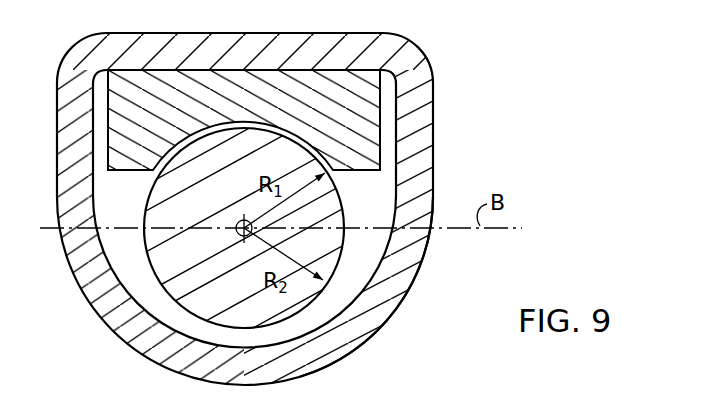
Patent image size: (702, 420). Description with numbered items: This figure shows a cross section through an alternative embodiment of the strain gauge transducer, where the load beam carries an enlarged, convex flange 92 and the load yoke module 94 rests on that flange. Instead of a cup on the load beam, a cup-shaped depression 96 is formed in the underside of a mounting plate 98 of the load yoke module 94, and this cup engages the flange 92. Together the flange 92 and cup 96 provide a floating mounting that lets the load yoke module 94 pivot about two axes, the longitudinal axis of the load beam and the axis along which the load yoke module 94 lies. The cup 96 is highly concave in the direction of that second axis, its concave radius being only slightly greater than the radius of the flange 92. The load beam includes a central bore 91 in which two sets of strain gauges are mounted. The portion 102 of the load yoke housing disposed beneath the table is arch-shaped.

The load yoke module 94 is at (445, 64).
The cup-shaped depression 96 is at (157, 169).
The mounting plate 98 is at (380, 147).
The central bore 91 is at (238, 222).
The flange 92 is at (146, 203).
The portion of the load yoke housing 102 is at (405, 257).